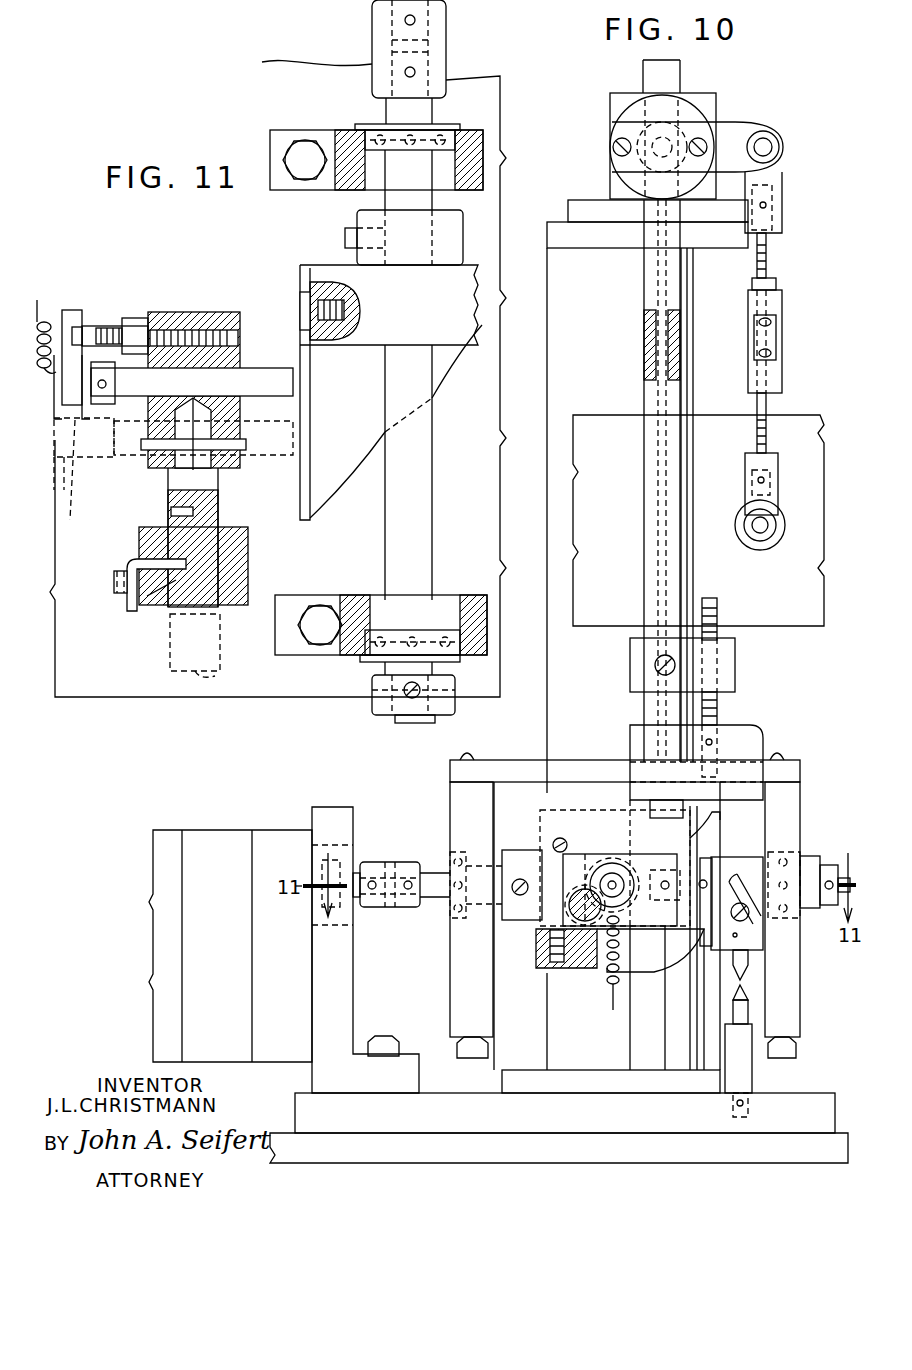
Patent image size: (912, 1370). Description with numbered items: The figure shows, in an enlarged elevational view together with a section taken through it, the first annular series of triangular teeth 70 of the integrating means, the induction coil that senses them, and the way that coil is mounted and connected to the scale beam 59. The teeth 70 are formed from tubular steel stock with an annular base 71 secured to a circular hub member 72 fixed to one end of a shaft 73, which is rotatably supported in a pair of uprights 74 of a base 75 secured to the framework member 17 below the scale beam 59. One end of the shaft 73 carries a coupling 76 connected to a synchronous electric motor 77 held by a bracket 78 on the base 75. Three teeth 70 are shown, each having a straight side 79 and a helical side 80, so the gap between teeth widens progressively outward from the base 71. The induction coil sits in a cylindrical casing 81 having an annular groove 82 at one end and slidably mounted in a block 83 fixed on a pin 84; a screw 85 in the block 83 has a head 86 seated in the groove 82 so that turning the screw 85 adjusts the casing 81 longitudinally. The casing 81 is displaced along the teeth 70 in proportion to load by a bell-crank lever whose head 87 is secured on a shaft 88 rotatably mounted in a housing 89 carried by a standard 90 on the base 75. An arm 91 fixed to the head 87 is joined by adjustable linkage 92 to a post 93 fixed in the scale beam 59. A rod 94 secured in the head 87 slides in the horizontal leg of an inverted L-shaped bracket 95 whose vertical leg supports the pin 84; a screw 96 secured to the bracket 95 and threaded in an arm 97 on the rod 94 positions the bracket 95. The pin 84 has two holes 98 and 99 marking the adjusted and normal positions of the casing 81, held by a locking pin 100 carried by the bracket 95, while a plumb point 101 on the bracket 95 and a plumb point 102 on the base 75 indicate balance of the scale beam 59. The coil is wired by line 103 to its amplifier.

In FIG. 10, the framework member 17 is at (350, 1152).
In FIG. 10, the scale beam 59 is at (798, 410).
In FIG. 11, the triangular teeth 70 is at (352, 417).
In FIG. 10, the triangular teeth 70 is at (605, 812).
In FIG. 11, the annular base 71 is at (300, 286).
In FIG. 10, the annular base 71 is at (572, 965).
In FIG. 11, the circular hub member 72 is at (334, 268).
In FIG. 10, the circular hub member 72 is at (540, 958).
In FIG. 11, the shaft 73 is at (432, 468).
In FIG. 10, the shaft 73 is at (490, 862).
In FIG. 11, the uprights 74 is at (284, 133).
In FIG. 10, the uprights 74 is at (458, 948).
In FIG. 10, the base 75 is at (805, 1095).
In FIG. 11, the coupling 76 is at (440, 40).
In FIG. 10, the coupling 76 is at (385, 860).
In FIG. 10, the synchronous electric motor 77 is at (217, 950).
In FIG. 10, the bracket 78 is at (325, 948).
In FIG. 11, the straight side 79 is at (300, 468).
In FIG. 10, the straight side 79 is at (700, 940).
In FIG. 11, the helical side 80 is at (338, 478).
In FIG. 10, the helical side 80 is at (695, 820).
In FIG. 11, the cylindrical casing 81 is at (266, 395).
In FIG. 10, the cylindrical casing 81 is at (611, 880).
In FIG. 11, the annular groove 82 is at (76, 455).
In FIG. 10, the annular groove 82 is at (622, 866).
In FIG. 11, the block 83 is at (193, 312).
In FIG. 10, the block 83 is at (647, 925).
In FIG. 11, the pin 84 is at (222, 625).
In FIG. 10, the pin 84 is at (706, 870).
In FIG. 11, the screw 85 is at (120, 325).
In FIG. 10, the screw 85 is at (568, 912).
In FIG. 11, the head 86 is at (76, 312).
In FIG. 10, the head 86 is at (596, 880).
In FIG. 10, the head 87 is at (688, 115).
In FIG. 10, the shaft 88 is at (640, 110).
In FIG. 10, the housing 89 is at (616, 108).
In FIG. 10, the standard 90 is at (600, 311).
In FIG. 10, the arm 91 is at (740, 125).
In FIG. 10, the adjustable linkage 92 is at (782, 333).
In FIG. 10, the post 93 is at (755, 540).
In FIG. 10, the rod 94 is at (644, 352).
In FIG. 11, the inverted L-shaped bracket 95 is at (240, 577).
In FIG. 10, the inverted L-shaped bracket 95 is at (752, 728).
In FIG. 10, the screw 96 is at (710, 598).
In FIG. 10, the arm 97 is at (735, 665).
In FIG. 11, the hole 98 is at (171, 511).
In FIG. 10, the hole 98 is at (708, 884).
In FIG. 11, the hole 99 is at (172, 600).
In FIG. 11, the locking pin 100 is at (128, 612).
In FIG. 10, the locking pin 100 is at (770, 920).
In FIG. 10, the plumb point 101 is at (748, 962).
In FIG. 10, the plumb point 102 is at (736, 1000).
In FIG. 11, the line 103 is at (40, 316).
In FIG. 10, the line 103 is at (616, 990).